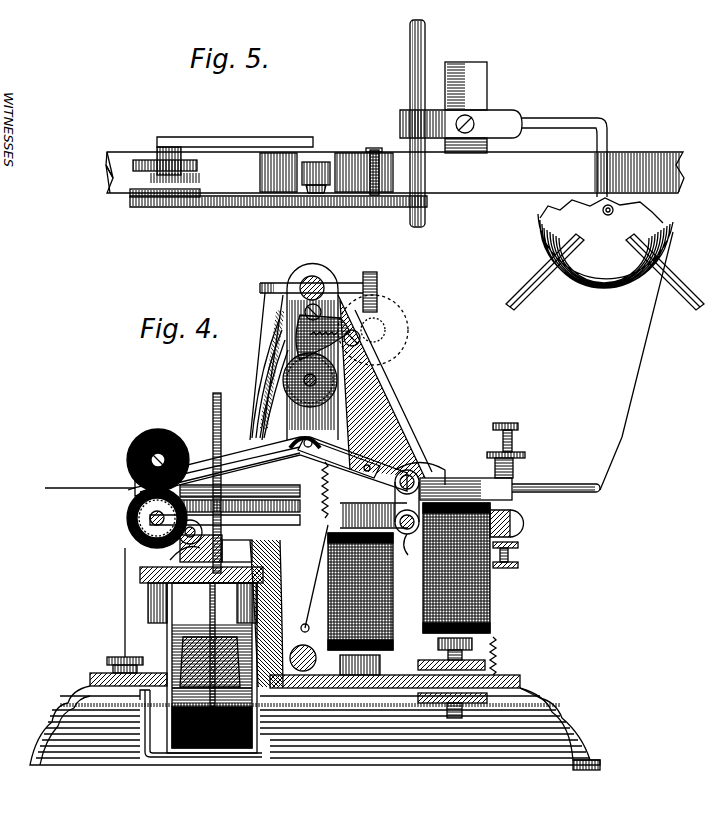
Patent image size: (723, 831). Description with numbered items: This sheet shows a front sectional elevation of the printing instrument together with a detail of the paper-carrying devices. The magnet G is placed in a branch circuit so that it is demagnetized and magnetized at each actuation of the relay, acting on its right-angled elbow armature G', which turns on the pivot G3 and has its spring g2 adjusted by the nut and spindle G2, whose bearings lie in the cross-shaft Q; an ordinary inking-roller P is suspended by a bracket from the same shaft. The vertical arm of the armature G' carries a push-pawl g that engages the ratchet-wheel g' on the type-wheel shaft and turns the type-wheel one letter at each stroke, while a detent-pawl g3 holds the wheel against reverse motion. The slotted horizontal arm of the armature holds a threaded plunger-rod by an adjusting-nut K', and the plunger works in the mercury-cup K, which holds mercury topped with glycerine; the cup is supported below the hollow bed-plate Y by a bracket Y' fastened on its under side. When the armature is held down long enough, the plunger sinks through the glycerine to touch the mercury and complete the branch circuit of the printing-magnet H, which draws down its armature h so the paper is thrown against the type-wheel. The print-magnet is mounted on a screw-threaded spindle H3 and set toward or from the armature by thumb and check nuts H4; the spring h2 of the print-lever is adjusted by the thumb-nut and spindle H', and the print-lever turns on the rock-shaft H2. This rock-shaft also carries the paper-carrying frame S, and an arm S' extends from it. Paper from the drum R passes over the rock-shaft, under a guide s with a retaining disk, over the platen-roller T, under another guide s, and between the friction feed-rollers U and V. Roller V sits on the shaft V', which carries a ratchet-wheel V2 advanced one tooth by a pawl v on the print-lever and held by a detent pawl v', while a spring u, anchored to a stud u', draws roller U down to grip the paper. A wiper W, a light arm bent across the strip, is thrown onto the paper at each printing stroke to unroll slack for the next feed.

In FIG. 5, the friction feed-roller U is at (220, 155).
In FIG. 4, the friction feed-roller U is at (172, 449).
In FIG. 5, the platen-roller T is at (316, 165).
In FIG. 4, the platen-roller T is at (271, 452).
In FIG. 5, the guide s is at (374, 164).
In FIG. 4, the guide s is at (239, 460).
In FIG. 5, the paper-carrying frame S is at (345, 221).
In FIG. 4, the paper-carrying frame S is at (236, 466).
In FIG. 4, the link S' is at (339, 458).
In FIG. 5, the rock-shaft H2 is at (405, 123).
In FIG. 4, the rock-shaft H2 is at (416, 474).
In FIG. 5, the armature h is at (461, 124).
In FIG. 4, the armature h is at (472, 461).
In FIG. 5, the wiper W is at (579, 157).
In FIG. 4, the wiper W is at (556, 479).
In FIG. 4, the paper-drum R is at (605, 254).
In FIG. 4, the cross-shaft Q is at (322, 283).
In FIG. 4, the nut and spindle G2 is at (334, 292).
In FIG. 4, the inking-roller P is at (392, 338).
In FIG. 4, the detent-pawl g3 is at (300, 324).
In FIG. 4, the push-pawl g is at (328, 332).
In FIG. 4, the ratchet-wheel g' is at (310, 380).
In FIG. 4, the spring g2 is at (230, 483).
In FIG. 4, the magnet G is at (341, 491).
In FIG. 4, the elbow armature G' is at (379, 508).
In FIG. 4, the pivot G3 is at (414, 547).
In FIG. 4, the spring u is at (240, 496).
In FIG. 4, the stud u' is at (225, 512).
In FIG. 4, the pawl v is at (141, 495).
In FIG. 4, the friction feed-roller V is at (143, 518).
In FIG. 4, the ratchet-wheel V2 is at (157, 518).
In FIG. 4, the shaft V' is at (124, 545).
In FIG. 4, the detent pawl v' is at (186, 542).
In FIG. 4, the adjusting-nut K' is at (216, 548).
In FIG. 4, the spring h2 is at (336, 490).
In FIG. 4, the printing-magnet H is at (426, 589).
In FIG. 4, the screw-threaded spindle H3 is at (467, 653).
In FIG. 4, the thumb and check nuts H4 is at (480, 673).
In FIG. 4, the thumb-nut and spindle H' is at (217, 599).
In FIG. 4, the mercury-cup K is at (201, 660).
In FIG. 4, the bed-plate Y is at (315, 721).
In FIG. 4, the bracket Y' is at (201, 738).